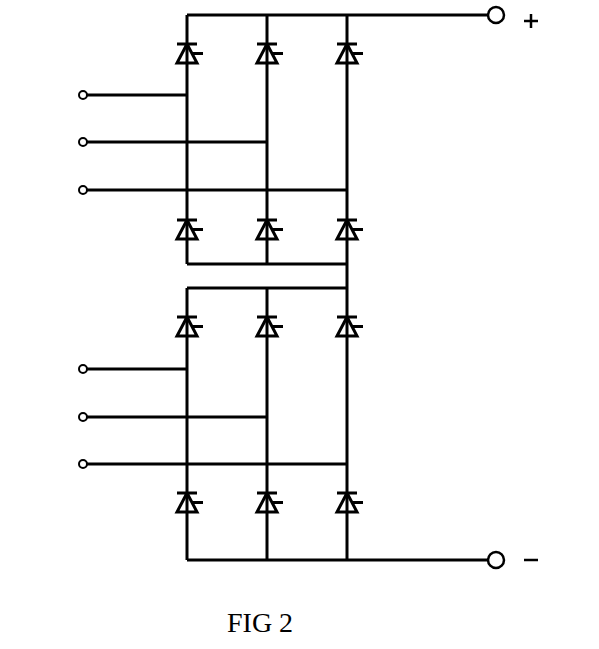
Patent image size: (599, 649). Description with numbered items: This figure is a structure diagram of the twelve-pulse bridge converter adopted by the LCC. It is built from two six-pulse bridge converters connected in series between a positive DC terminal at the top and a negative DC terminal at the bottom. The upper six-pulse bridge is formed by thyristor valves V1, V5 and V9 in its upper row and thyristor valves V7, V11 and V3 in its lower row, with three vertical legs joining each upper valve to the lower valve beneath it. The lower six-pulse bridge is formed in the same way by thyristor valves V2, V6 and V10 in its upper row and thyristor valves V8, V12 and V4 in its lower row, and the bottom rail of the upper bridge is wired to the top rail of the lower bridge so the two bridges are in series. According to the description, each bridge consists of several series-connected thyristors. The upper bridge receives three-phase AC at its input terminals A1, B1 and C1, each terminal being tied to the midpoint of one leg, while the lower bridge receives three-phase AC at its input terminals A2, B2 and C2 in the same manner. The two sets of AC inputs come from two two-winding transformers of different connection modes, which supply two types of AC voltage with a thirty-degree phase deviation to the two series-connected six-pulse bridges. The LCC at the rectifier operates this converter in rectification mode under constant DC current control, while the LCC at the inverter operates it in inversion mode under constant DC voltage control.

The thyristor V1 is at (204, 55).
The thyristor V2 is at (204, 328).
The thyristor V3 is at (364, 231).
The thyristor V4 is at (364, 504).
The thyristor V5 is at (284, 55).
The thyristor V6 is at (284, 328).
The thyristor V7 is at (204, 231).
The thyristor V8 is at (204, 504).
The thyristor V9 is at (364, 55).
The thyristor V10 is at (368, 328).
The thyristor V11 is at (287, 231).
The thyristor V12 is at (288, 504).
The phase A input terminal of first bridge A1 is at (110, 97).
The phase B input terminal of first bridge B1 is at (150, 144).
The phase C input terminal of first bridge C1 is at (190, 192).
The phase A input terminal of second bridge A2 is at (110, 371).
The phase B input terminal of second bridge B2 is at (150, 419).
The phase C input terminal of second bridge C2 is at (190, 466).